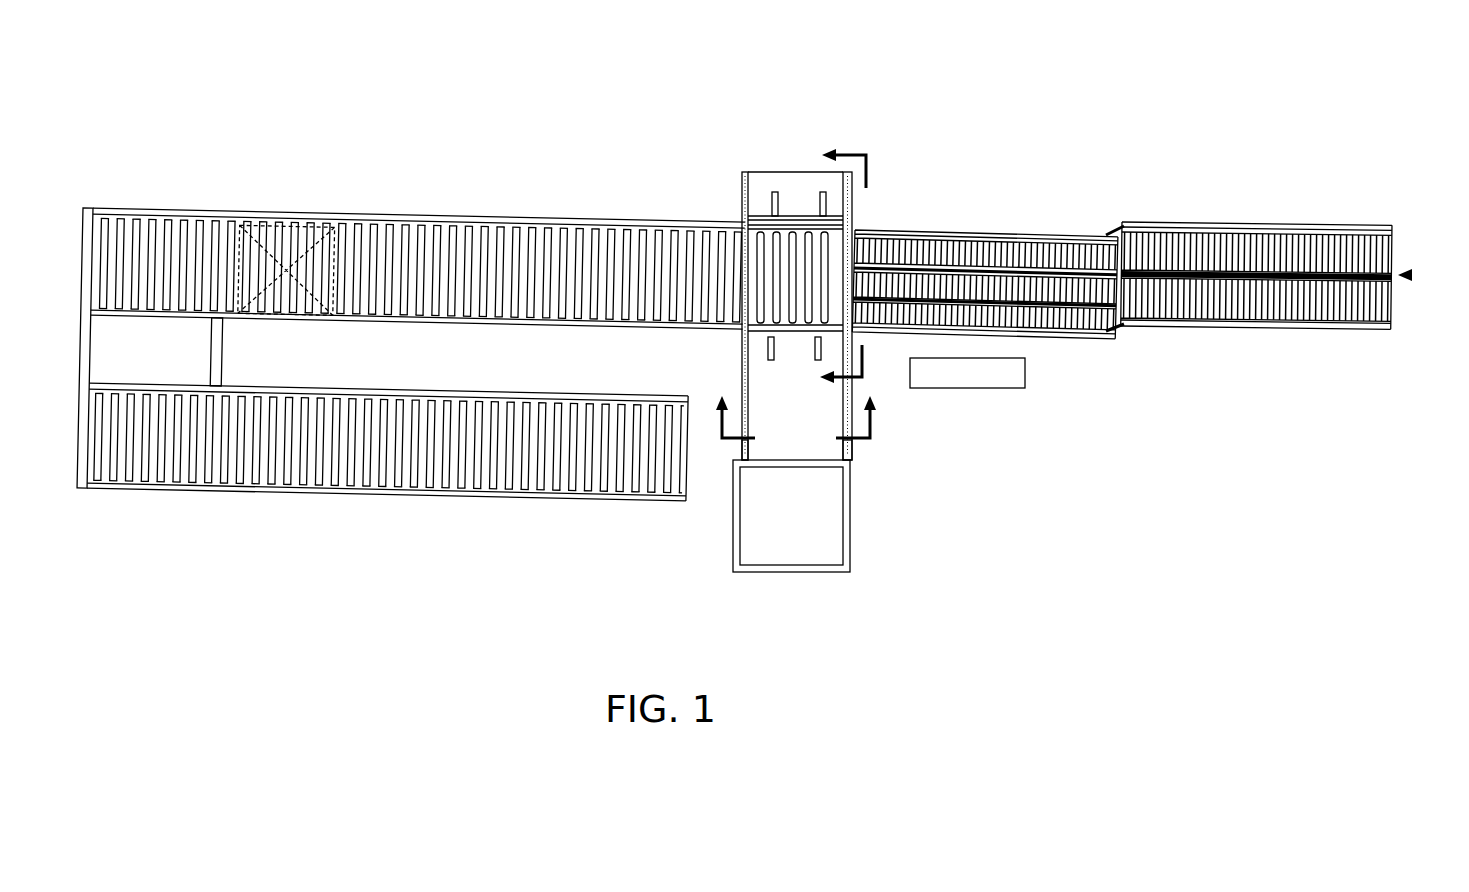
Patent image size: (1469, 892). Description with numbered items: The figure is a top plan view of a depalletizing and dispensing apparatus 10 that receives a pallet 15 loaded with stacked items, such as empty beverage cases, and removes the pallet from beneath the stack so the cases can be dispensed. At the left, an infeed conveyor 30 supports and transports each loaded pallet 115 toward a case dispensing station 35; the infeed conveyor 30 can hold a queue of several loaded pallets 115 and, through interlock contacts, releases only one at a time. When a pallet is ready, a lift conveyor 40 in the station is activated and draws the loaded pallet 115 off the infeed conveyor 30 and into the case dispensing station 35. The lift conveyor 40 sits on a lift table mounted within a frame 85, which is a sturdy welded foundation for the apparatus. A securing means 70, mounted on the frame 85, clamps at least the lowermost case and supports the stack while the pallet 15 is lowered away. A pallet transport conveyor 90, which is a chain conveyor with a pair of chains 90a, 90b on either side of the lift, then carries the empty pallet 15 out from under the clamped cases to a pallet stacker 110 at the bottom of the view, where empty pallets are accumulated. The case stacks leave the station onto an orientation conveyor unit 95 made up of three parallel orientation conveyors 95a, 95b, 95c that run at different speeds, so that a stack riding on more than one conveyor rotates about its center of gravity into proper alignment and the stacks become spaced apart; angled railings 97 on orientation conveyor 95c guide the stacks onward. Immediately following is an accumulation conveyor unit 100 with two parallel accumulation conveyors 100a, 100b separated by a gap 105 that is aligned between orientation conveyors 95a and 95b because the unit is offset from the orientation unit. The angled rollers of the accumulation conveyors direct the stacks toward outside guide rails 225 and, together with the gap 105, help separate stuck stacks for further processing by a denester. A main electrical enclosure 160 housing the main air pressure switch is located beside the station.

The depalletizing and dispensing apparatus 10 is at (661, 132).
The pallet 15 is at (778, 513).
The infeed conveyor 30 is at (190, 246).
The case dispensing station 35 is at (785, 150).
The lift conveyor 40 is at (775, 262).
The securing means 70 is at (826, 206).
The frame 85 is at (745, 213).
The pallet transport conveyor 90 is at (848, 458).
The chain 90a is at (736, 447).
The chain 90b is at (848, 448).
The orientation conveyor unit 95 is at (1032, 200).
The orientation conveyor 95a is at (998, 245).
The orientation conveyor 95b is at (1047, 303).
The orientation conveyor 95c is at (1033, 310).
The angled railings 97 is at (1110, 232).
The accumulation conveyor unit 100 is at (1286, 350).
The accumulation conveyor 100a is at (1333, 245).
The accumulation conveyor 100b is at (1313, 300).
The gap 105 is at (1412, 274).
The pallet stacker 110 is at (850, 508).
The loaded pallet 115 is at (336, 222).
The main electrical enclosure 160 is at (932, 389).
The outside guide rails 225 is at (1248, 222).